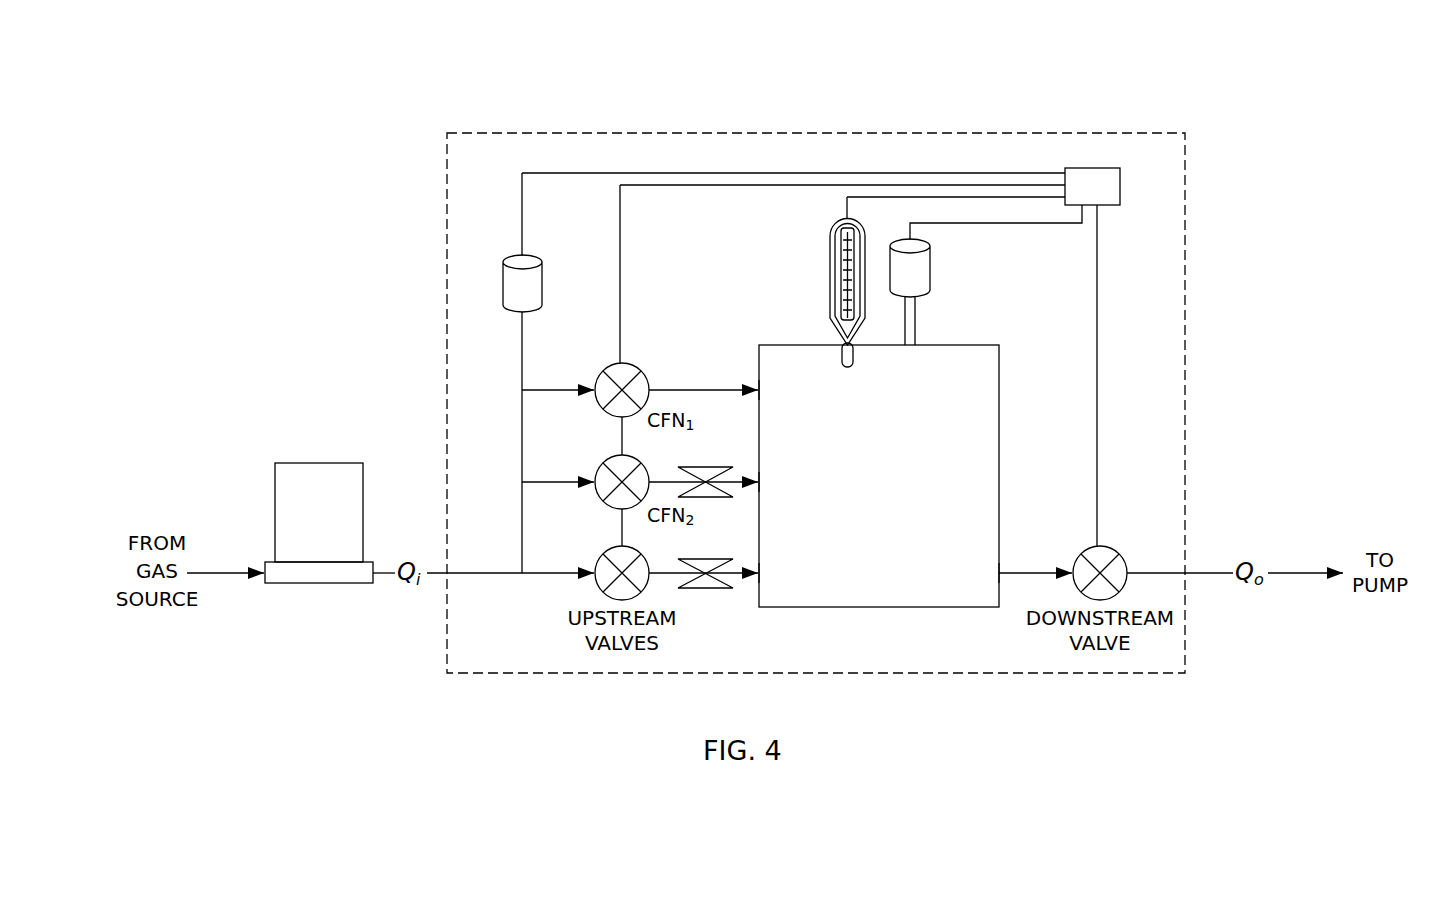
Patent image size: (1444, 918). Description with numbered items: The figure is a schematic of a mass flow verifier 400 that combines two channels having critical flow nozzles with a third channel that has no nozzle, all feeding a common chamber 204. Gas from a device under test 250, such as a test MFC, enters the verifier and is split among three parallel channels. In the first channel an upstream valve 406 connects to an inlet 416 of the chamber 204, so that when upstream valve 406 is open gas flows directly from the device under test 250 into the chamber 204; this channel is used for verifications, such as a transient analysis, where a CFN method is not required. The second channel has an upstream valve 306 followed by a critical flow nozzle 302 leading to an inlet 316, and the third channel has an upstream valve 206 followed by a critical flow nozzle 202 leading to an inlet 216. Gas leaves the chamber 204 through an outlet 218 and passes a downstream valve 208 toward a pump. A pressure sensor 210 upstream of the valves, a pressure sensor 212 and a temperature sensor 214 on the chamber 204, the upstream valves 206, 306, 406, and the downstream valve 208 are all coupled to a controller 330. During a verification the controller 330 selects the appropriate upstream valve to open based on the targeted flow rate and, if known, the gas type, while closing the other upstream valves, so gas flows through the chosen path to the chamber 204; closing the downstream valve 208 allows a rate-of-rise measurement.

The mass flow verifier 400 is at (1122, 133).
The controller 330 is at (1092, 186).
The pressure sensor 210 is at (519, 257).
The pressure sensor 212 is at (934, 270).
The temperature sensor 214 is at (829, 284).
The chamber 204 is at (879, 476).
The upstream valve 406 is at (615, 366).
The upstream valve 306 is at (615, 458).
The upstream valve 206 is at (615, 549).
The critical flow nozzle 302 is at (703, 467).
The critical flow nozzle 202 is at (703, 559).
The inlet 416 is at (759, 390).
The inlet 316 is at (759, 482).
The inlet 216 is at (759, 573).
The outlet 218 is at (999, 573).
The downstream valve 208 is at (1088, 548).
The device under test 250 is at (312, 463).